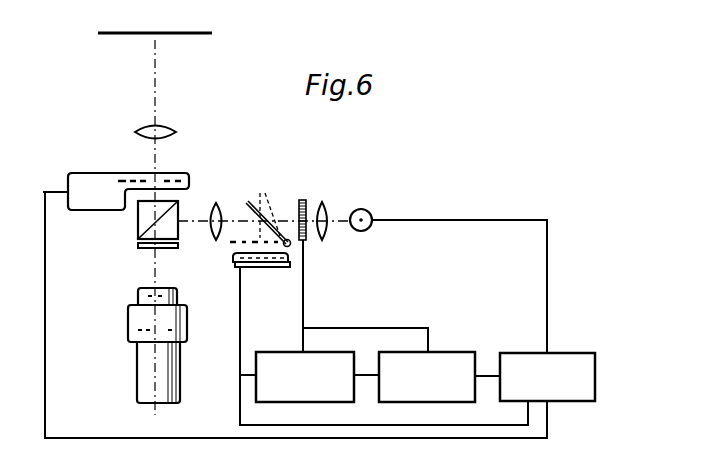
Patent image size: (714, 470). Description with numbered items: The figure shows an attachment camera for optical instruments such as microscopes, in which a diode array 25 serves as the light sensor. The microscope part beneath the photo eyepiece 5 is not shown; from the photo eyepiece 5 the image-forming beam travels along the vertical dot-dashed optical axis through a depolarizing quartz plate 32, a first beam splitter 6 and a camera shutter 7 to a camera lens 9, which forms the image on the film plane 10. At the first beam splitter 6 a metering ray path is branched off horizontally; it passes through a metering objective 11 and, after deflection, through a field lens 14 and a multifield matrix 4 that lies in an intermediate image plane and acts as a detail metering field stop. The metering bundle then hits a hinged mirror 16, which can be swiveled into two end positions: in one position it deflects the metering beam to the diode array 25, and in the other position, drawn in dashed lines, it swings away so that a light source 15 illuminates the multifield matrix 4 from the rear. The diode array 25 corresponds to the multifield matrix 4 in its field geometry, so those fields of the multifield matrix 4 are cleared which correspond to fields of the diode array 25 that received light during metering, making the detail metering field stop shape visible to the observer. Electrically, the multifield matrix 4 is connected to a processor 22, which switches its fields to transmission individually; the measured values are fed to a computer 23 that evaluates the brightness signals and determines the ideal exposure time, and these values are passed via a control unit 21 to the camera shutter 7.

The film plane 10 is at (115, 34).
The camera lens 9 is at (147, 128).
The camera shutter 7 is at (108, 184).
The first beam splitter 6 is at (140, 221).
The depolarizing quartz plate 32 is at (140, 250).
The photo eyepiece 5 is at (137, 320).
The metering objective 11 is at (219, 202).
The hinged mirror 16 is at (261, 200).
The diode array 25 is at (269, 268).
The multifield matrix 4 is at (302, 200).
The field lens 14 is at (326, 204).
The light source 15 is at (368, 209).
The processor 22 is at (314, 387).
The computer 23 is at (439, 387).
The control unit 21 is at (558, 388).